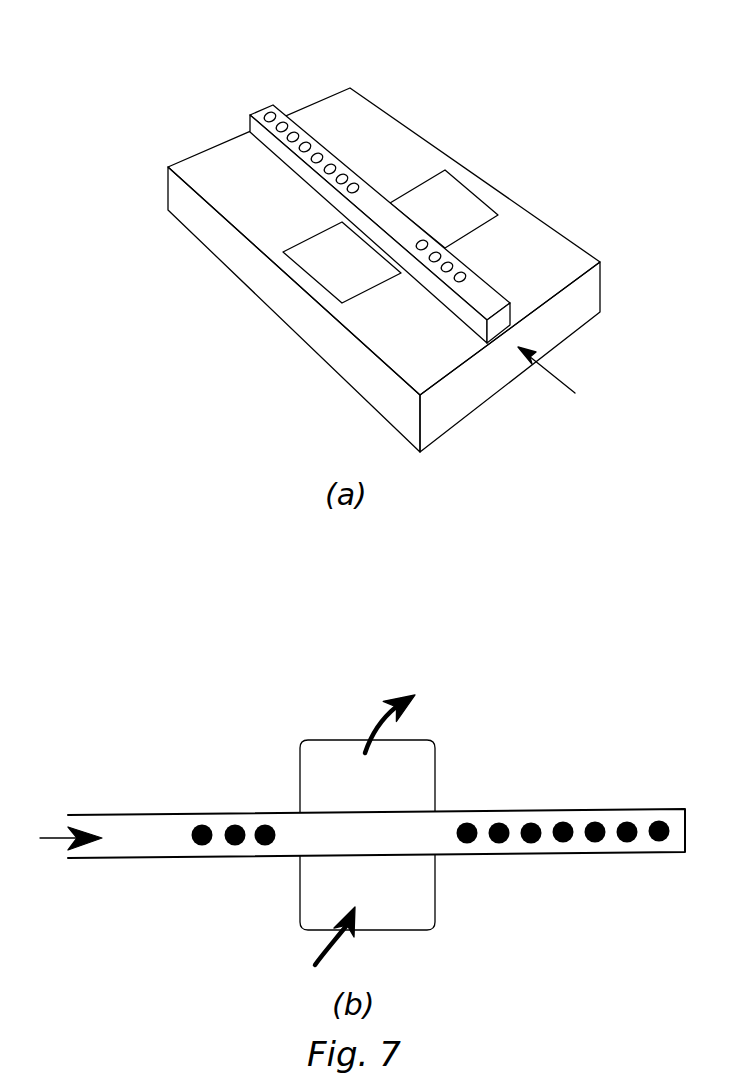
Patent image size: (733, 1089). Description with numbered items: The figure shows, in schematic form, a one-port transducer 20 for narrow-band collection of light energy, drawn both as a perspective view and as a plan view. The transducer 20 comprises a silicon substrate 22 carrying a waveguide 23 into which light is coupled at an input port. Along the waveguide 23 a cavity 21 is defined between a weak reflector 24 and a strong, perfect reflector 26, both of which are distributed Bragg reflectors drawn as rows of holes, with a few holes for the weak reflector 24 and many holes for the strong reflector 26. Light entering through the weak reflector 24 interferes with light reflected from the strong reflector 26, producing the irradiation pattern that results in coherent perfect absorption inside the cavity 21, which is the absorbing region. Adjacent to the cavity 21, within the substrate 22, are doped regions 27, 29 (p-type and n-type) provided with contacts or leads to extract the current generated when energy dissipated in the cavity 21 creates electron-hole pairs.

The one-port transducer 20 is at (356, 512).
The cavity 21 is at (388, 218).
The silicon substrate 22 is at (532, 242).
The waveguide 23 is at (498, 297).
The weak reflector 24 is at (447, 250).
The strong reflector 26 is at (310, 137).
The doped region 27 is at (462, 203).
The doped region 29 is at (309, 267).